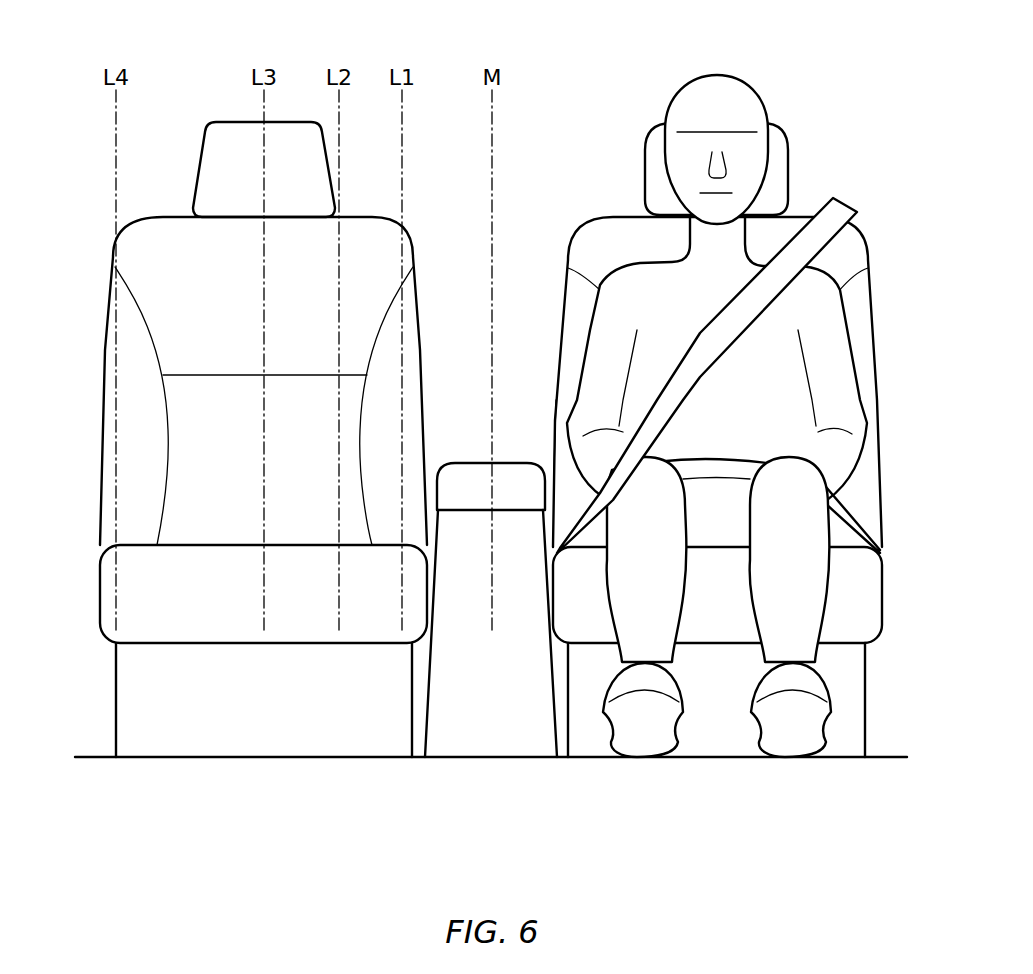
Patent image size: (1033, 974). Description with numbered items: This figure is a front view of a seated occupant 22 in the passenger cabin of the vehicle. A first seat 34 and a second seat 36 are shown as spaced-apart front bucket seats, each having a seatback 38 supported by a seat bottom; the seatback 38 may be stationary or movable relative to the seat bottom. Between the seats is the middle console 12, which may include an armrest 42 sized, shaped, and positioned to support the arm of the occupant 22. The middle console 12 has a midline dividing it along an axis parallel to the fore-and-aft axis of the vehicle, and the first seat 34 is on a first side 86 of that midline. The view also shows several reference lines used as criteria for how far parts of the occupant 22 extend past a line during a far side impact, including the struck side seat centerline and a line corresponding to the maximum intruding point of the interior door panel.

The middle console 12 is at (528, 422).
The occupant 22 is at (738, 77).
The first seat 34 is at (878, 383).
The second seat 36 is at (101, 385).
The seatback 38 is at (173, 215).
The armrest 42 is at (505, 463).
The first side 86 is at (557, 440).